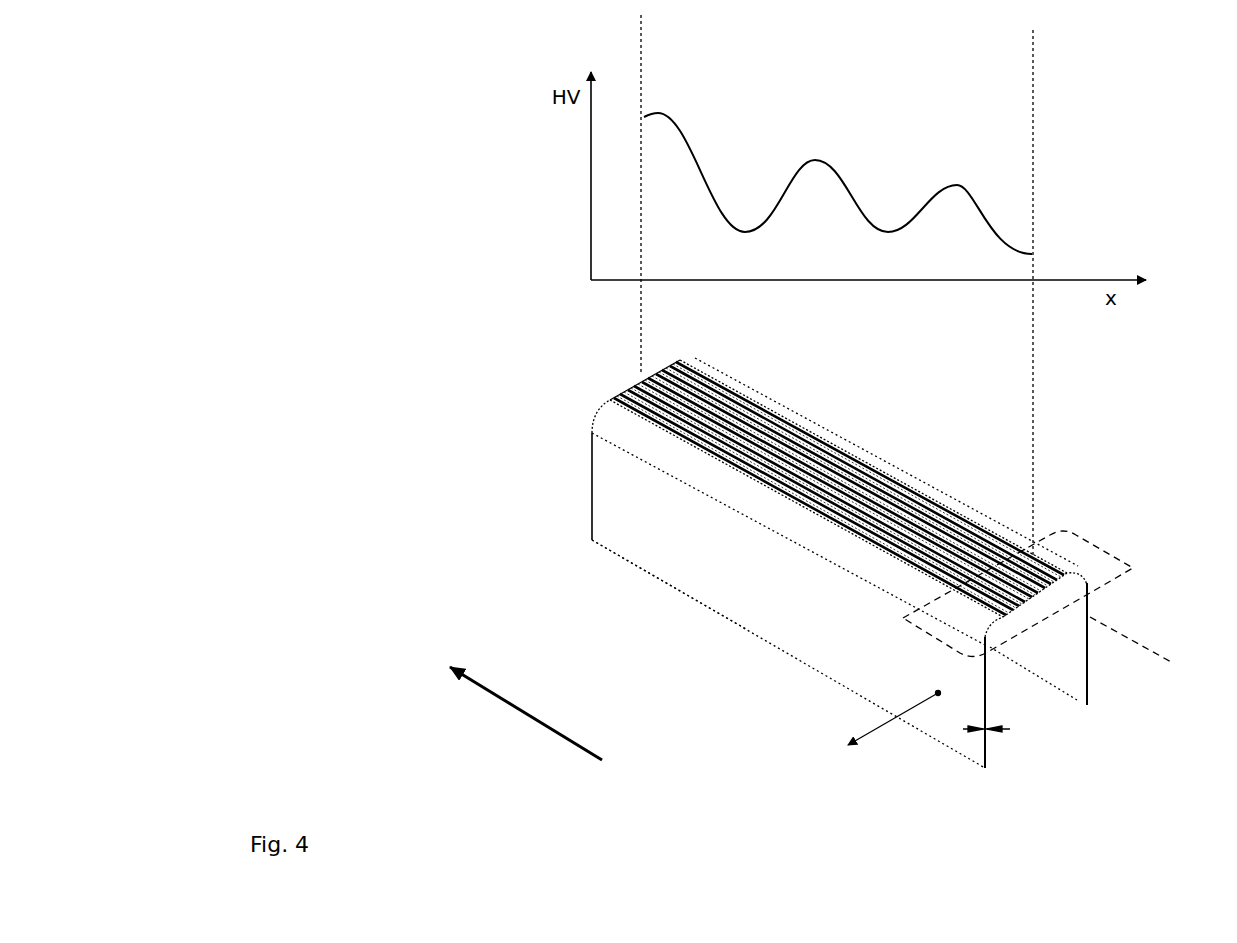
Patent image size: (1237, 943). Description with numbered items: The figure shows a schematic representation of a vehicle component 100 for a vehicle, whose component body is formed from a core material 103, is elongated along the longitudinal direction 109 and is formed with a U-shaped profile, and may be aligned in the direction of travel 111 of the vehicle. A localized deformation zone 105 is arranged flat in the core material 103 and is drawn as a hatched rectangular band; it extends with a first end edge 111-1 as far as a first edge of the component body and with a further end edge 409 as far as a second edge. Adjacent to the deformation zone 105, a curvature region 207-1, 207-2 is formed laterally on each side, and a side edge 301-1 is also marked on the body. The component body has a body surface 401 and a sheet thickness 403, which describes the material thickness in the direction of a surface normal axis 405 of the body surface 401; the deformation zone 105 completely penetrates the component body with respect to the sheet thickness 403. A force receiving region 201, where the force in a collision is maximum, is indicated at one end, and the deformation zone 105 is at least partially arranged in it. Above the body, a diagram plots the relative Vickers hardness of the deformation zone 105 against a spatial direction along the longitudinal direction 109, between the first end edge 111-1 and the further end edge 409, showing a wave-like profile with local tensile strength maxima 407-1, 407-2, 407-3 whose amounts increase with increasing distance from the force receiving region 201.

The vehicle component 100 is at (503, 333).
The core material 103 is at (805, 640).
The deformation zone 105 is at (832, 455).
The longitudinal direction 109 is at (1154, 650).
The direction of travel 111 is at (526, 713).
The first end edge 111-1 is at (1062, 578).
The force receiving region 201 is at (1068, 530).
The curvature region 207-1 is at (908, 478).
The curvature region 207-2 is at (612, 428).
The first side edge 301-1 is at (592, 483).
The body surface 401 is at (680, 517).
The sheet thickness 403 is at (980, 730).
The surface normal axis 405 is at (894, 716).
The local tensile strength maximum 407-1 is at (955, 183).
The local tensile strength maximum 407-2 is at (820, 158).
The local tensile strength maximum 407-3 is at (658, 113).
The further end edge 409 is at (620, 378).